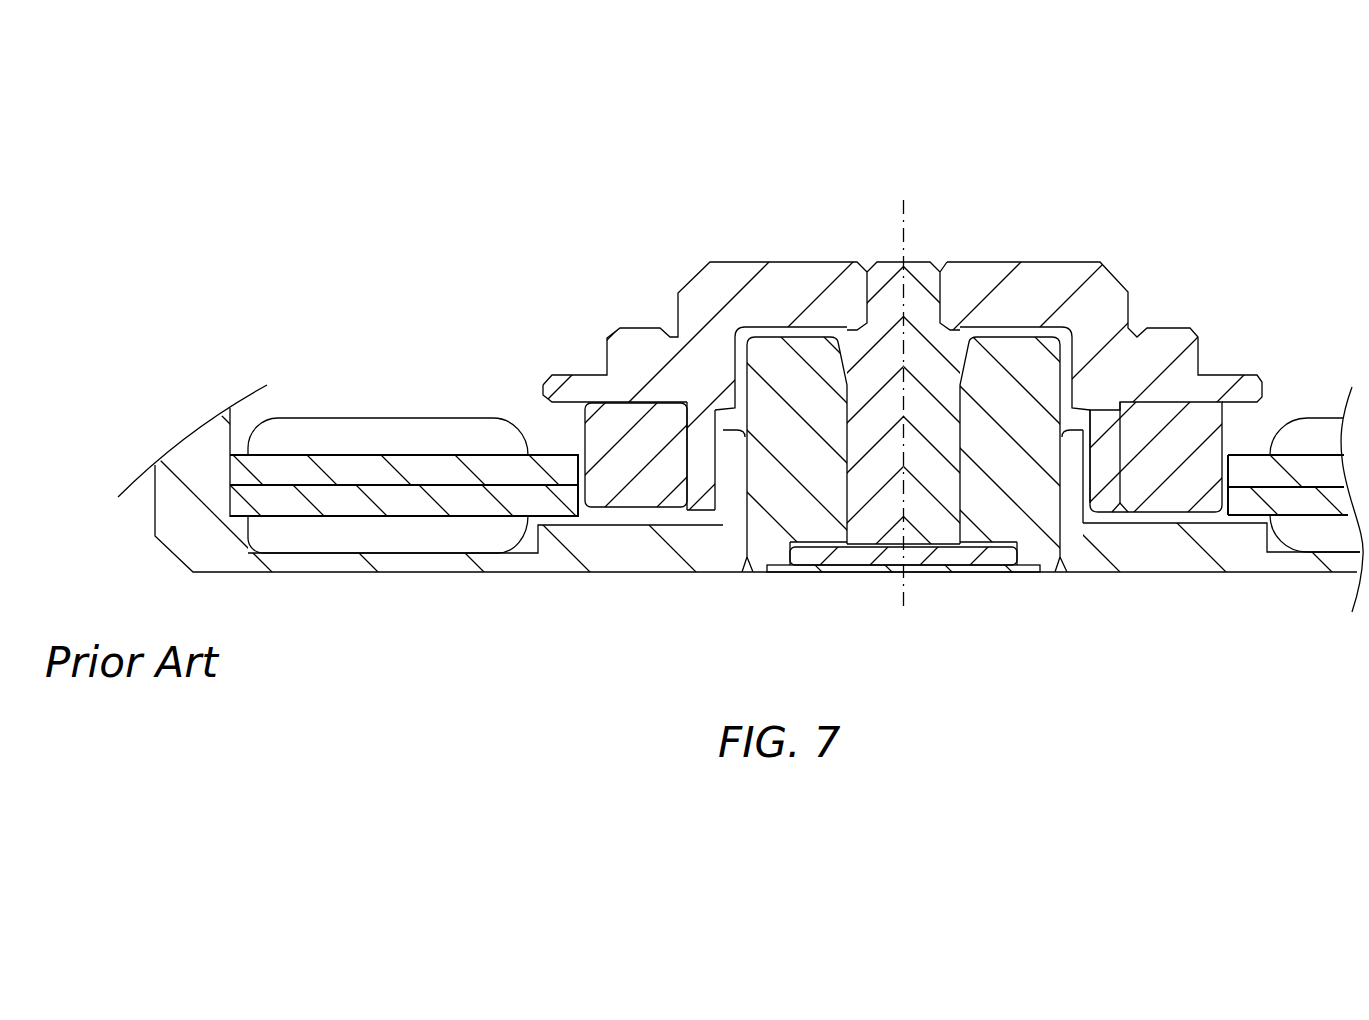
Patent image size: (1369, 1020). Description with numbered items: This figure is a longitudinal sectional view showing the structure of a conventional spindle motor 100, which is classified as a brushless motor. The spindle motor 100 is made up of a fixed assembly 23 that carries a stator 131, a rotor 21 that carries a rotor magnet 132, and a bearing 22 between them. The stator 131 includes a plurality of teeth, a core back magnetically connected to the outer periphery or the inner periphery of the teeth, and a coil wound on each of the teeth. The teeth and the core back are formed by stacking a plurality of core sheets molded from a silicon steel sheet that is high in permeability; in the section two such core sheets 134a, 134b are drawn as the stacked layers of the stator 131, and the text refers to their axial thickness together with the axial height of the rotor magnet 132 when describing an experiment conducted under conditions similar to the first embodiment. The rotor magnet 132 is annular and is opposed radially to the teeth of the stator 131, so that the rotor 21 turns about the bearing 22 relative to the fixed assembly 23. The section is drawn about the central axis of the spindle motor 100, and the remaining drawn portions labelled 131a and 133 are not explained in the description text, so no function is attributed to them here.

The spindle motor 100 is at (905, 160).
The rotor 21 is at (1092, 310).
The bearing 22 is at (1015, 497).
The fixed assembly 23 is at (697, 552).
The stator 131 is at (464, 377).
The upper layer of substrate plate 131a is at (382, 440).
The rotor magnet 132 is at (1167, 457).
The base 133 is at (264, 362).
The core sheet 134a is at (268, 470).
The core sheet 134b is at (270, 500).